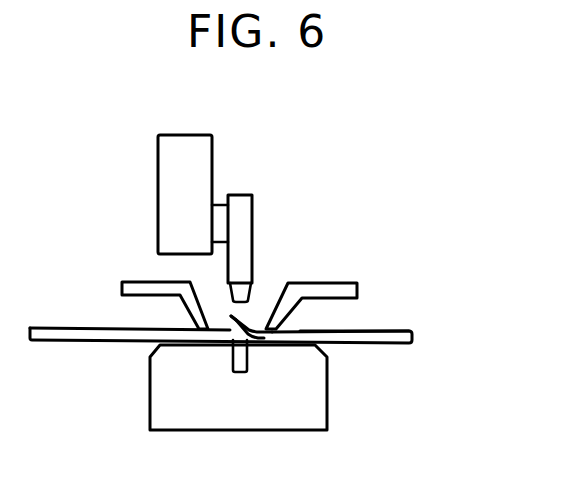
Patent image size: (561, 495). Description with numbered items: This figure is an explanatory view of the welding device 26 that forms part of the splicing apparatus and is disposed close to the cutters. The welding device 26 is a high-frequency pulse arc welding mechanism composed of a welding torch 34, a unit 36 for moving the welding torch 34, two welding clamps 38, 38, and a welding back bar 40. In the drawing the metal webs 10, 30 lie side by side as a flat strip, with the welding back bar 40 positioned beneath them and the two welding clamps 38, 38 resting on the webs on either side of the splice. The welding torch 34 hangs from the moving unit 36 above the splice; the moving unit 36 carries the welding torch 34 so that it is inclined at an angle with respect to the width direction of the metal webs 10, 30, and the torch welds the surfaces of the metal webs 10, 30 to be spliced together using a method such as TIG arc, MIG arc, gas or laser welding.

The metal web 10 is at (393, 330).
The welding device 26 is at (347, 180).
The metal web 30 is at (72, 334).
The welding torch 34 is at (245, 223).
The unit for moving the welding torch 36 is at (203, 155).
The welding clamp 38 is at (147, 282).
The welding back bar 40 is at (322, 383).